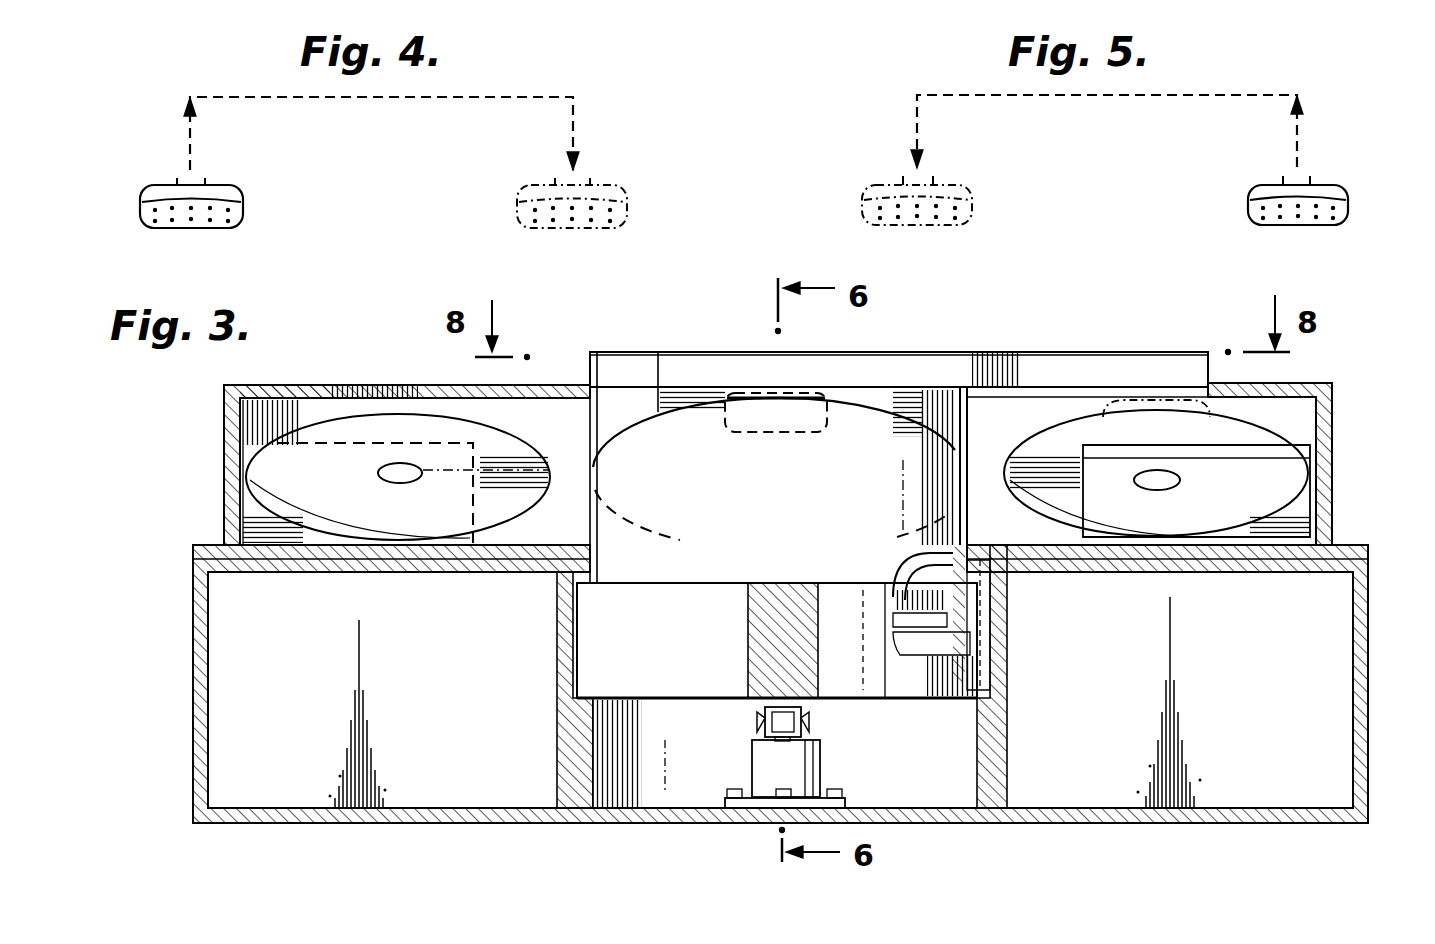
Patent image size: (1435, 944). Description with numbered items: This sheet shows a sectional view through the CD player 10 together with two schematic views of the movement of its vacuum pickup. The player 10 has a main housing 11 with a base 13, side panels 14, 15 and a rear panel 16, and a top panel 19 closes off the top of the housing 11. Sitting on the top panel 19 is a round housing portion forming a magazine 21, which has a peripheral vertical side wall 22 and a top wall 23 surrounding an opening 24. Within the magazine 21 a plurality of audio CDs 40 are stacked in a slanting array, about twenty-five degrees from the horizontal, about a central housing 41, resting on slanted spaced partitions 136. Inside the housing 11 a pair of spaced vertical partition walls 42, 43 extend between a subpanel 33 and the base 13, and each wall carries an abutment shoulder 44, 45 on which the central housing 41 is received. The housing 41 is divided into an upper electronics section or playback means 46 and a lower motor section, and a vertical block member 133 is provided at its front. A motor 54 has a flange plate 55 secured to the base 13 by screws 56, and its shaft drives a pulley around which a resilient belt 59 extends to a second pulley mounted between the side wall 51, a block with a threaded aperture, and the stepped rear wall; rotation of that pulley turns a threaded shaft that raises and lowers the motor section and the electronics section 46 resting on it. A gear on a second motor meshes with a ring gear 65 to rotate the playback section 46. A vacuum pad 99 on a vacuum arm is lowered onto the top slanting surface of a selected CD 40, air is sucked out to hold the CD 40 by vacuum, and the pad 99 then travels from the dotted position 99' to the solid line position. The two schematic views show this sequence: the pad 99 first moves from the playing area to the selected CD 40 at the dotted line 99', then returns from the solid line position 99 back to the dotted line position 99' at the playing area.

In FIG. 3, the CD player 10 is at (1378, 445).
In FIG. 3, the main housing 11 is at (190, 603).
In FIG. 3, the base 13 is at (395, 822).
In FIG. 3, the side panel 14 is at (193, 722).
In FIG. 3, the side panel 15 is at (1370, 705).
In FIG. 3, the rear panel 16 is at (1272, 750).
In FIG. 3, the top panel 19 is at (270, 540).
In FIG. 3, the magazine 21 is at (218, 392).
In FIG. 3, the peripheral vertical side wall 22 is at (230, 445).
In FIG. 3, the top wall 23 is at (293, 385).
In FIG. 3, the opening 24 is at (347, 385).
In FIG. 3, the subpanel 33 is at (383, 573).
In FIG. 3, the CD 40 is at (500, 455).
In FIG. 3, the central housing 41 is at (908, 345).
In FIG. 3, the partition wall 42 is at (568, 757).
In FIG. 3, the partition wall 43 is at (992, 757).
In FIG. 3, the abutment shoulder 44 is at (580, 693).
In FIG. 3, the abutment shoulder 45 is at (1007, 680).
In FIG. 3, the electronics section 46 is at (580, 509).
In FIG. 3, the side wall 51 is at (1005, 612).
In FIG. 3, the motor 54 is at (768, 758).
In FIG. 3, the flange plate 55 is at (742, 808).
In FIG. 3, the screws 56 is at (838, 793).
In FIG. 3, the resilient belt 59 is at (806, 716).
In FIG. 3, the ring gear 65 is at (900, 590).
In FIG. 4, the vacuum pad 99 is at (167, 164).
In FIG. 5, the vacuum pad 99 is at (1316, 165).
In FIG. 3, the vacuum pad 99 is at (749, 365).
In FIG. 4, the dotted line position of vacuum pad 99' is at (590, 164).
In FIG. 5, the dotted line position of vacuum pad 99' is at (890, 153).
In FIG. 3, the dotted line position of vacuum pad 99' is at (1158, 349).
In FIG. 3, the vertical block member 133 is at (775, 605).
In FIG. 3, the slanted spaced partitions 136 is at (280, 538).